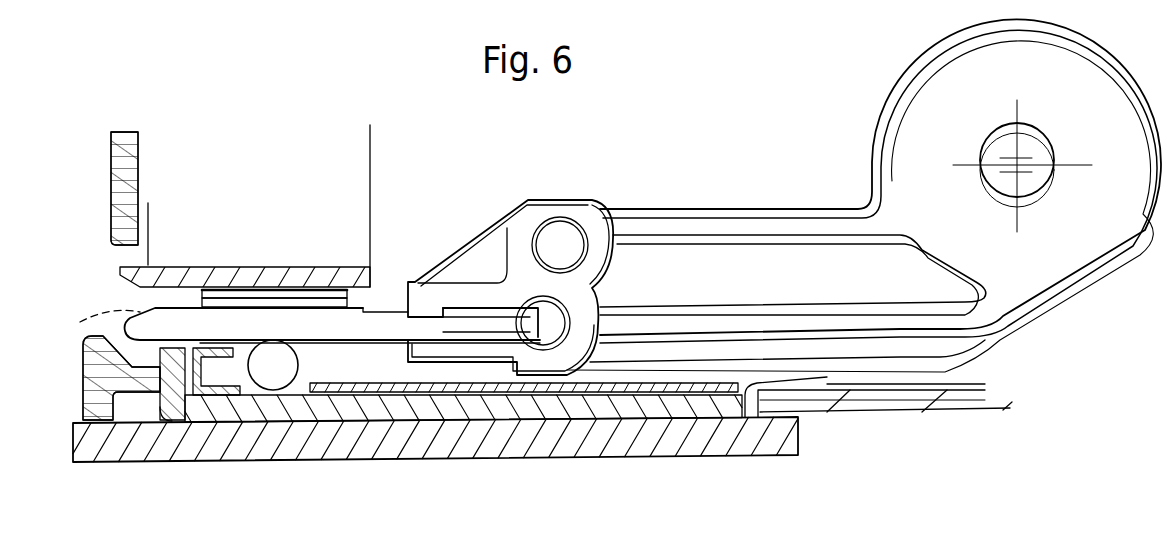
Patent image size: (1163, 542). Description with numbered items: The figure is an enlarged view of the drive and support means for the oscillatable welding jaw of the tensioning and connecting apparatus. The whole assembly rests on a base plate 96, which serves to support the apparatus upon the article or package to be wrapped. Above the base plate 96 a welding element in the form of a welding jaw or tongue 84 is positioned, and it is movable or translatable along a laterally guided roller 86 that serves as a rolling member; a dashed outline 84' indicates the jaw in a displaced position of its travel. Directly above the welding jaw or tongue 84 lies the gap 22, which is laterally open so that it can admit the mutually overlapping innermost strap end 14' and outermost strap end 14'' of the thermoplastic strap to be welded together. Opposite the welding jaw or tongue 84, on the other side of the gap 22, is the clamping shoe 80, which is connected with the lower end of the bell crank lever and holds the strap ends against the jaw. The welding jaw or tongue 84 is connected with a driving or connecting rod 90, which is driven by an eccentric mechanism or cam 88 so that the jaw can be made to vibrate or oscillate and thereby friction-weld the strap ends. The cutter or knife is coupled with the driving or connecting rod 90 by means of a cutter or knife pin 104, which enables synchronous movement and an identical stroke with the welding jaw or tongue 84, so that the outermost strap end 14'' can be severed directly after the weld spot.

The gap 22 is at (165, 300).
The clamping shoe 80 is at (243, 265).
The outermost strap end 14'' is at (274, 253).
The innermost strap end 14' is at (316, 248).
The welding jaw or tongue 84 is at (347, 323).
The welding jaw alternate position 84' is at (93, 323).
The cutter or knife pin 104 is at (563, 240).
The driving or connecting rod 90 is at (765, 209).
The eccentric mechanism or cam 88 is at (1043, 128).
The laterally guided roller 86 is at (282, 380).
The base plate 96 is at (522, 458).